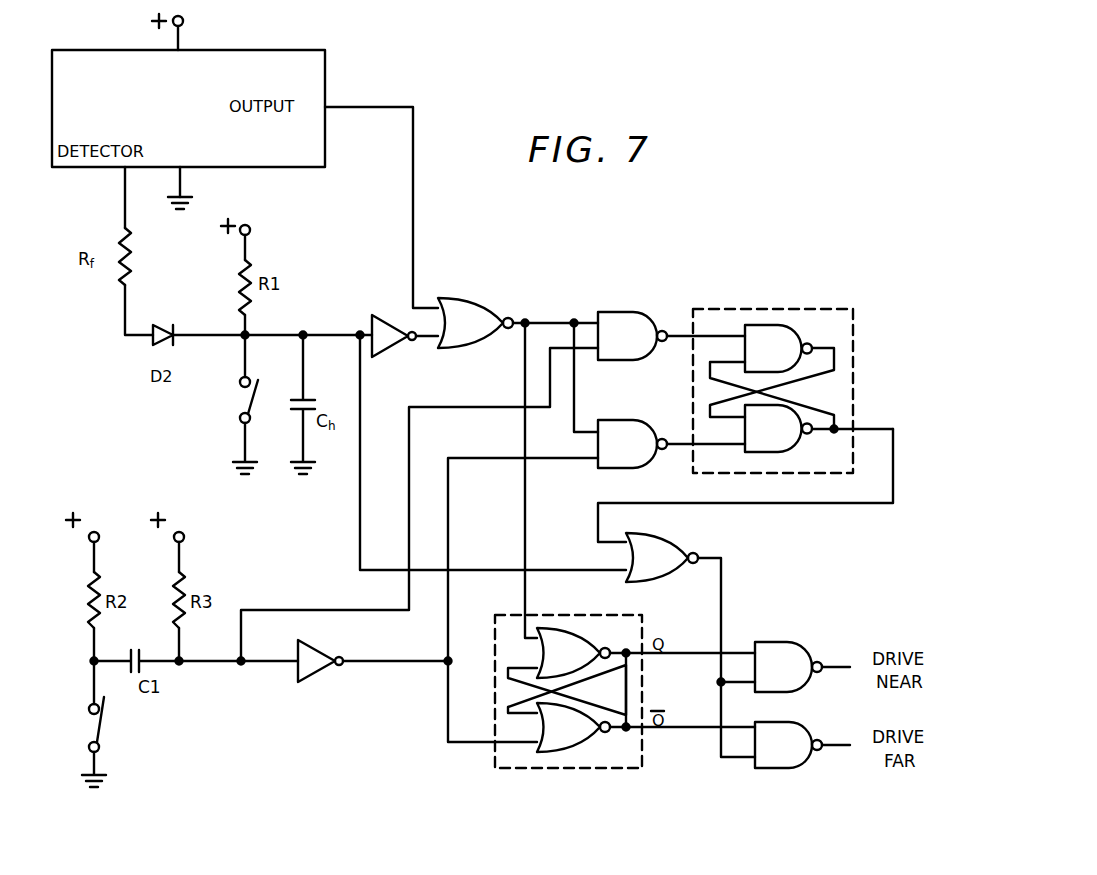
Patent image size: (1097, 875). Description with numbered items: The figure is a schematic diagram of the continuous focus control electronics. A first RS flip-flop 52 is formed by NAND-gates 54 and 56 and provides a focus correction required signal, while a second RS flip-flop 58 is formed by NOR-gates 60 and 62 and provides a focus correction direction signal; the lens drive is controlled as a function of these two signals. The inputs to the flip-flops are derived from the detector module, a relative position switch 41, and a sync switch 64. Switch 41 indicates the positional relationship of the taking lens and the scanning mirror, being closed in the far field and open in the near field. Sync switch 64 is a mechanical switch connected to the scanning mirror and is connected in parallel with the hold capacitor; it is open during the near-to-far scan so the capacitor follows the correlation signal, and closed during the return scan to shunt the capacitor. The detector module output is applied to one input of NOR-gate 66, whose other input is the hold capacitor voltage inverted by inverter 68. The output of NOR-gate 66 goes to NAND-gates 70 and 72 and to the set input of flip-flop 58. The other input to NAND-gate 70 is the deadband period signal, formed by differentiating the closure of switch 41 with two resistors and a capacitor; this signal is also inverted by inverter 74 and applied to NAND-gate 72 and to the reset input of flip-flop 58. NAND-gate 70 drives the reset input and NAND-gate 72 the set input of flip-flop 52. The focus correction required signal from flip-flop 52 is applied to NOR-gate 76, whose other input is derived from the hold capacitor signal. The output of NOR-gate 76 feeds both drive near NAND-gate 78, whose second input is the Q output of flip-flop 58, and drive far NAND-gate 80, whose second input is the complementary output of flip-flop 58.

The relative position switch 41 is at (85, 718).
The first RS flip-flop 52 is at (793, 371).
The NAND-gate 54 is at (790, 330).
The NAND-gate 56 is at (795, 452).
The second RS flip-flop 58 is at (575, 687).
The NOR-gate 60 is at (596, 633).
The NOR-gate 62 is at (580, 752).
The sync switch 64 is at (250, 402).
The NOR-gate 66 is at (471, 297).
The inverter 68 is at (393, 323).
The NAND-gate 70 is at (621, 312).
The NAND-gate 72 is at (620, 420).
The inverter 74 is at (305, 682).
The NOR-gate 76 is at (668, 533).
The drive near NAND-gate 78 is at (775, 642).
The drive far NAND-gate 80 is at (795, 771).